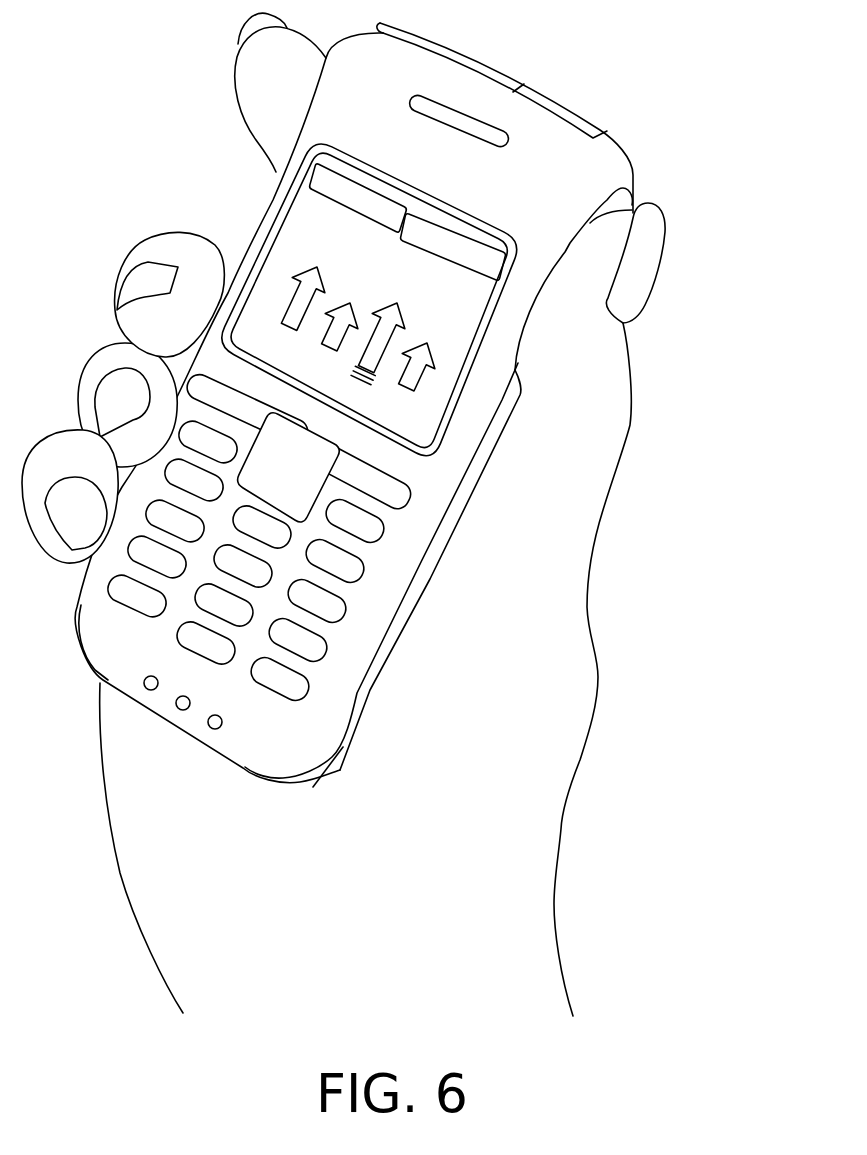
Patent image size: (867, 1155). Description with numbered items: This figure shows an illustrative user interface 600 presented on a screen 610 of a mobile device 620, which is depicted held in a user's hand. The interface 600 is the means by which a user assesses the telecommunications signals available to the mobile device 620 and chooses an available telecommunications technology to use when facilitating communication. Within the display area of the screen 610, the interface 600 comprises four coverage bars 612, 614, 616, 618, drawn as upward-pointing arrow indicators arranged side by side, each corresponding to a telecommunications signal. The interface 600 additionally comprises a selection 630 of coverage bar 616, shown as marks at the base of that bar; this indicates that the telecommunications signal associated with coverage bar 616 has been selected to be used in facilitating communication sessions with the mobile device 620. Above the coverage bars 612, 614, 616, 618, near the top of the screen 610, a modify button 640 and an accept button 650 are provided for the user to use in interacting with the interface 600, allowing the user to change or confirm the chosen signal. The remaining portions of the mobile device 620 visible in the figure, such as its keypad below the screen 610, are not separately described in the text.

The user interface 600 is at (250, 273).
The screen 610 is at (270, 223).
The coverage bar 612 is at (320, 267).
The coverage bar 614 is at (365, 292).
The coverage bar 616 is at (397, 302).
The coverage bar 618 is at (440, 336).
The mobile device 620 is at (672, 112).
The selection 630 is at (357, 383).
The modify button 640 is at (357, 181).
The accept button 650 is at (462, 232).